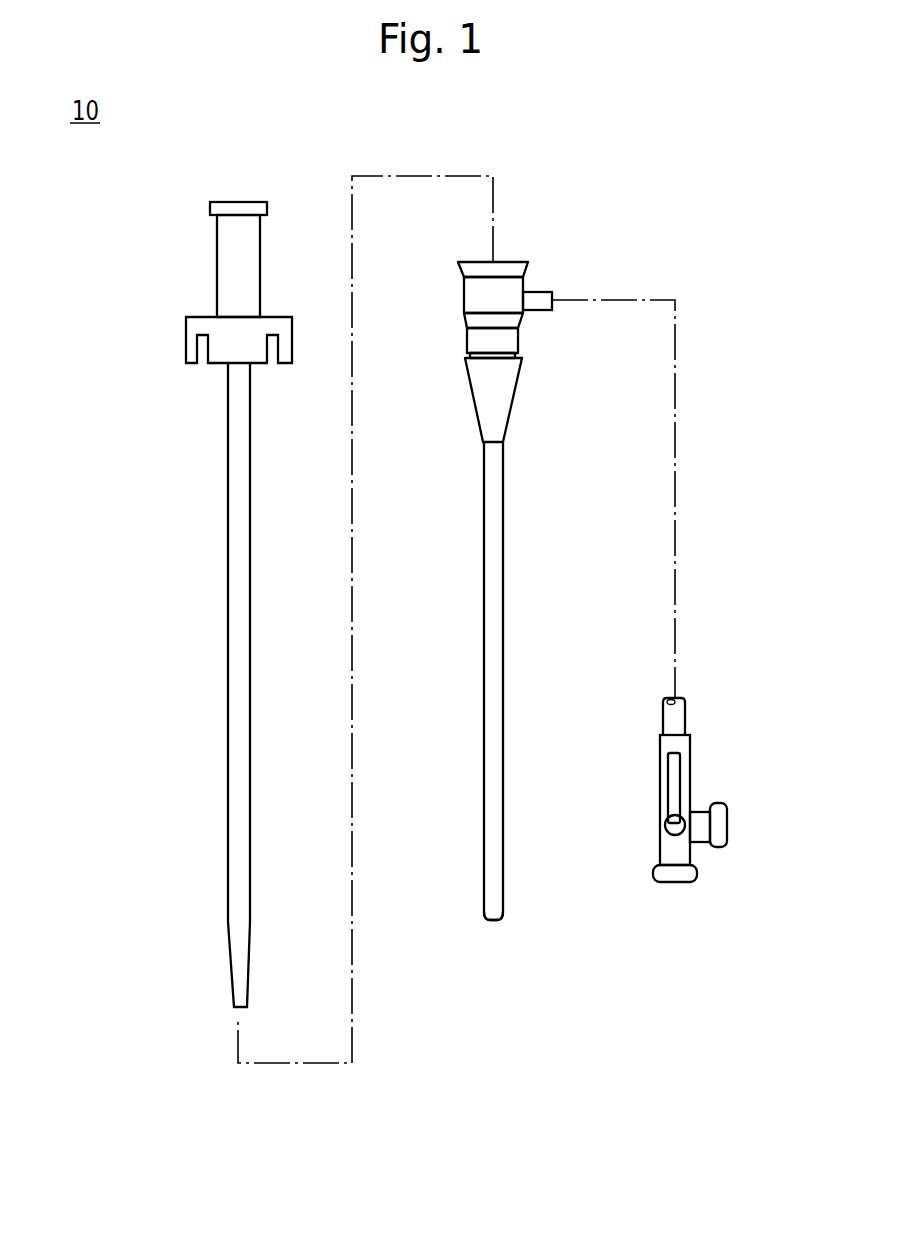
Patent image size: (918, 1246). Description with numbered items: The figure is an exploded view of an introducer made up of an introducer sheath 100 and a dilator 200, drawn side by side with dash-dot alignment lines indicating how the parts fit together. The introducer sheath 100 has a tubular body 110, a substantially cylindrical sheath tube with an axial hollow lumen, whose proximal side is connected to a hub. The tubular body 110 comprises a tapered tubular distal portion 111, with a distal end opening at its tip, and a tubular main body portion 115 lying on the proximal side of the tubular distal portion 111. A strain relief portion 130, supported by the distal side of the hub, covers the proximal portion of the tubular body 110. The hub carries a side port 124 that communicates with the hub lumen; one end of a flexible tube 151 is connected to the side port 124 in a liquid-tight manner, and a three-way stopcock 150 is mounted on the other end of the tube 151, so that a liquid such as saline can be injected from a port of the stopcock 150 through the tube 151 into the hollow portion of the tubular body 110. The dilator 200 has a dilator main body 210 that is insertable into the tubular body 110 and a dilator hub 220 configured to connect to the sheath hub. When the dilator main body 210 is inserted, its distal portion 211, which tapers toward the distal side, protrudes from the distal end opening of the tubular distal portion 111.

The introducer sheath 100 is at (536, 261).
The tubular body 110 is at (542, 686).
The tubular distal portion 111 is at (500, 910).
The tubular main body portion 115 is at (497, 798).
The side port 124 is at (538, 306).
The strain relief portion 130 is at (500, 370).
The three-way stopcock 150 is at (713, 790).
The flexible tube 151 is at (682, 720).
The dilator 200 is at (182, 282).
The dilator main body 210 is at (230, 610).
The distal portion 211 is at (237, 975).
The dilator hub 220 is at (197, 343).